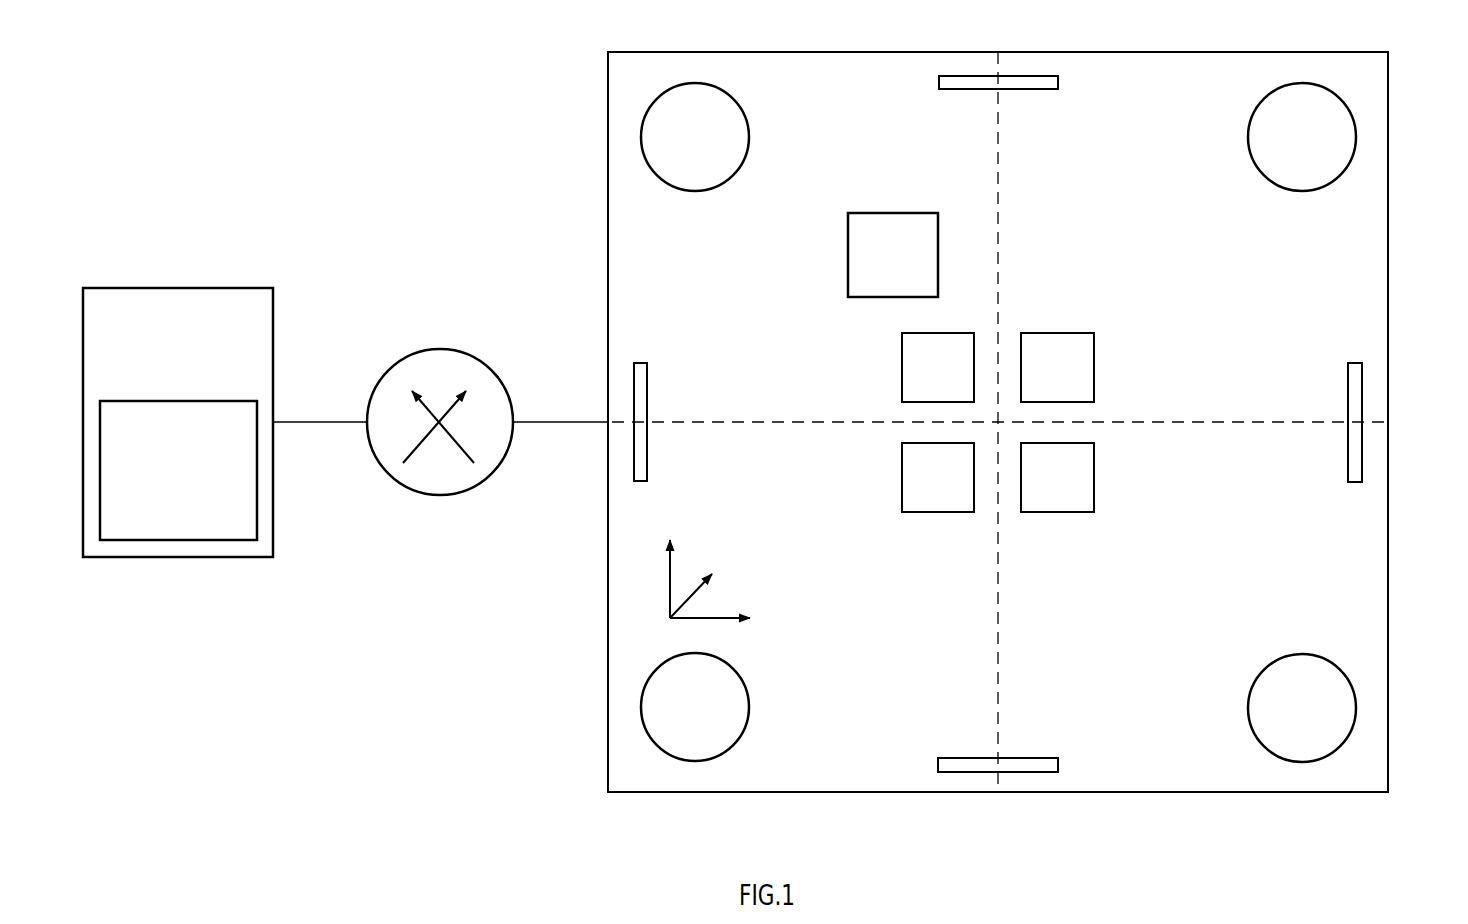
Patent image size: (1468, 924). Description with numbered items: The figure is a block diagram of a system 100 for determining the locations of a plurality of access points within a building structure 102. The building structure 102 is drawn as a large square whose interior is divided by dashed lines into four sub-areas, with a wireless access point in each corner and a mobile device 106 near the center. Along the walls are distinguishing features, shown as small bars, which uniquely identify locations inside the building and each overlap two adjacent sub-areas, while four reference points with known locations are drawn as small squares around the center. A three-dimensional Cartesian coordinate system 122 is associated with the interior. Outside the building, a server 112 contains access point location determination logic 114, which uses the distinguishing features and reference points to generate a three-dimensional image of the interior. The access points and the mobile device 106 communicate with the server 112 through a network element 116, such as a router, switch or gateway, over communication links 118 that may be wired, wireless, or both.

The system 100 is at (342, 137).
The building structure 102 is at (1390, 153).
The mobile device 106 is at (848, 257).
The server 112 is at (167, 288).
The access point location determination logic 114 is at (178, 540).
The network element 116 is at (378, 380).
The communication links 118 is at (320, 423).
The coordinate system 122 is at (735, 507).